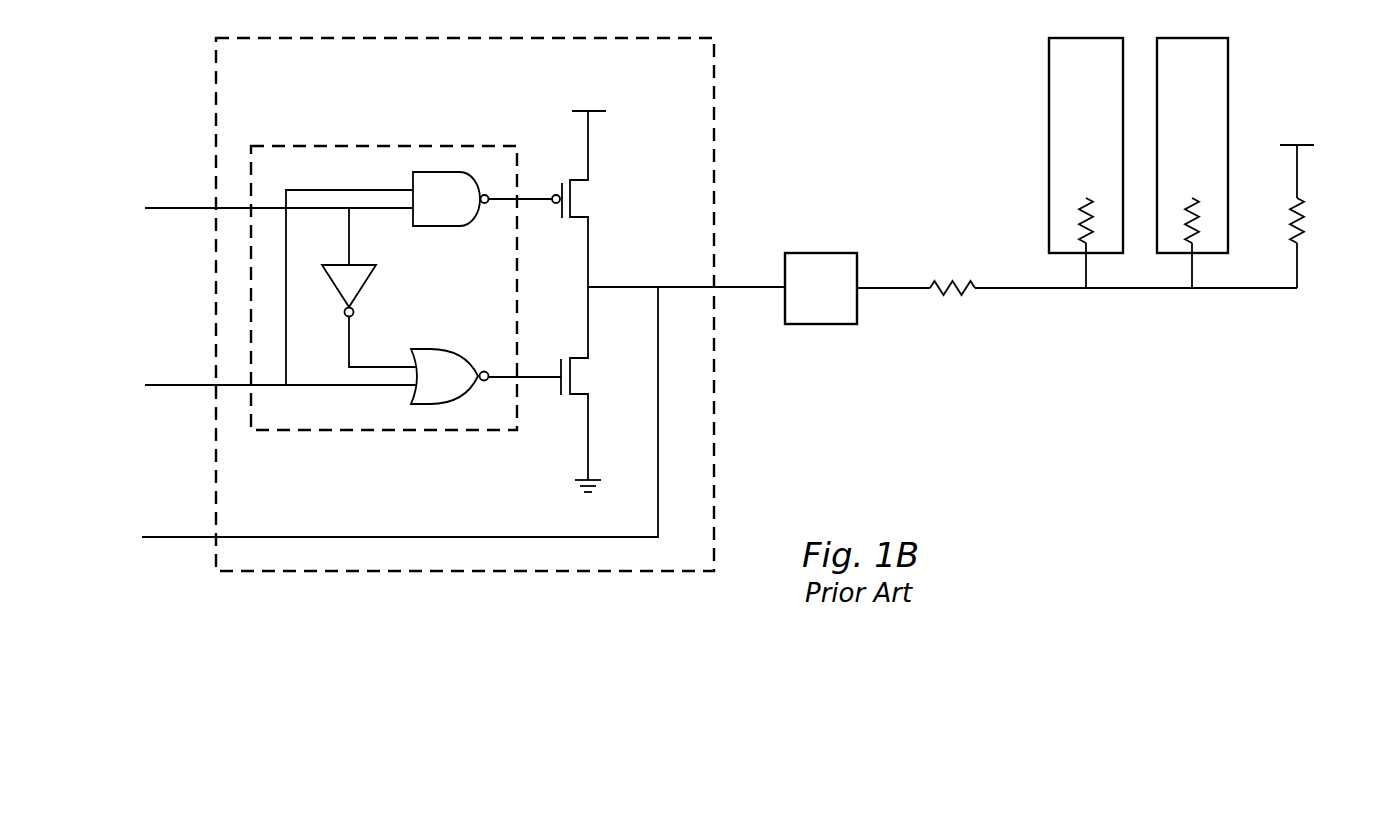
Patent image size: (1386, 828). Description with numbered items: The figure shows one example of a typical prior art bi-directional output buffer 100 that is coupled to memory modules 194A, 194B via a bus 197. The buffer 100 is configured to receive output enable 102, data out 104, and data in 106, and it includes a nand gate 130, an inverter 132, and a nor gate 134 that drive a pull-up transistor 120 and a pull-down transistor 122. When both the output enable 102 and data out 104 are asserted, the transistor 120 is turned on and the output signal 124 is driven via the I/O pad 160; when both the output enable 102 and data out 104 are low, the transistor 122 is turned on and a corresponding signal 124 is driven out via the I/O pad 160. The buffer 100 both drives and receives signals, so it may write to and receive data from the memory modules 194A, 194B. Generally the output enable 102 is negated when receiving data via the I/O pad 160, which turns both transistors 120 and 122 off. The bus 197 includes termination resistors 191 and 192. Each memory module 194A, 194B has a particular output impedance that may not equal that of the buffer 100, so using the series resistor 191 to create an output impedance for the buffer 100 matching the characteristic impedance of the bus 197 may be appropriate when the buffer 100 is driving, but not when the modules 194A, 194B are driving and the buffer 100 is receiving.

The bi-directional output buffer 100 is at (226, 73).
The output enable 102 is at (178, 207).
The data out 104 is at (178, 385).
The data in 106 is at (178, 537).
The transistor 120 is at (580, 198).
The transistor 122 is at (580, 376).
The output signal 124 is at (624, 287).
The nand gate 130 is at (447, 172).
The inverter 132 is at (362, 286).
The nor gate 134 is at (445, 404).
The I/O pad 160 is at (800, 301).
The series resistor 191 is at (944, 296).
The termination resistor 192 is at (1305, 226).
The memory module 194A is at (1058, 158).
The memory module 194B is at (1164, 158).
The bus 197 is at (1013, 290).